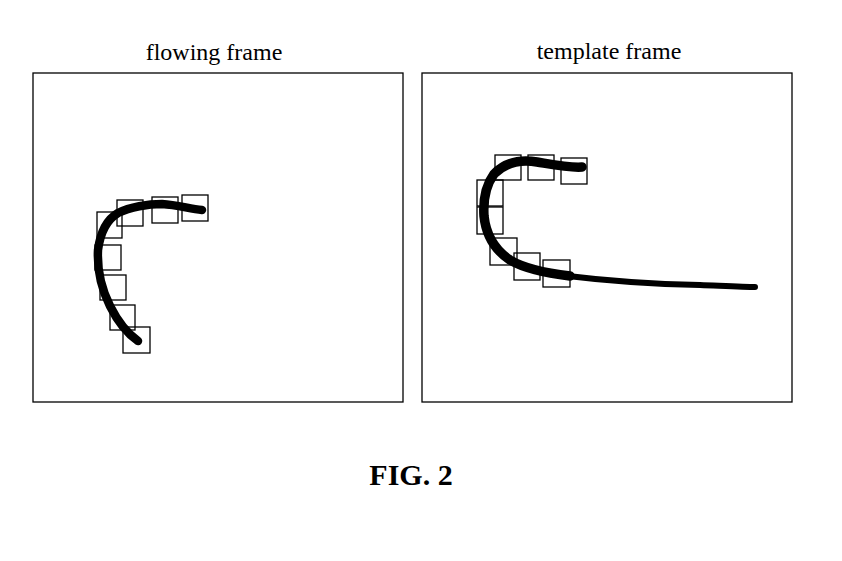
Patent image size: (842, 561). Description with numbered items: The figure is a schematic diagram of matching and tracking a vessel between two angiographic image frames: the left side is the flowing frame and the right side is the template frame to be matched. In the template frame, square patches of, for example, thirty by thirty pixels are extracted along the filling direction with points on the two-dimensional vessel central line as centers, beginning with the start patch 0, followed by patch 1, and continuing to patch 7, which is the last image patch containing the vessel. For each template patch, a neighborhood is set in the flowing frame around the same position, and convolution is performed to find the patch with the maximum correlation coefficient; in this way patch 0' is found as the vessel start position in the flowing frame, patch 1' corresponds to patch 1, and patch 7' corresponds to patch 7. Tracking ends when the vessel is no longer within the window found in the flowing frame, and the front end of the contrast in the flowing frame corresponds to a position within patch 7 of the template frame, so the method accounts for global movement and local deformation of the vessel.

The patch 0 is at (574, 154).
The patch 1 is at (541, 153).
The patch 7 is at (556, 289).
The patch 0' is at (198, 197).
The patch 1' is at (165, 198).
The patch 7' is at (136, 353).